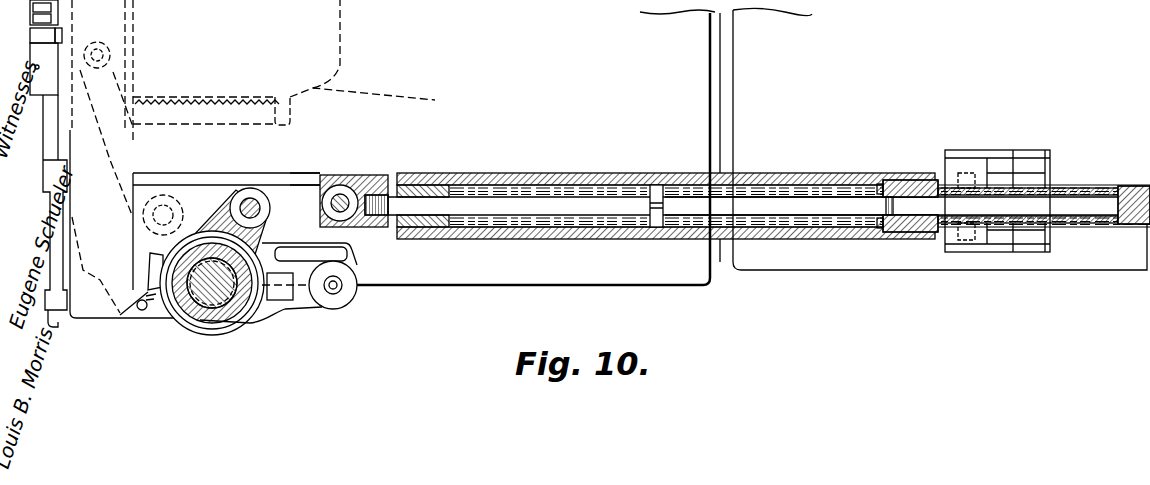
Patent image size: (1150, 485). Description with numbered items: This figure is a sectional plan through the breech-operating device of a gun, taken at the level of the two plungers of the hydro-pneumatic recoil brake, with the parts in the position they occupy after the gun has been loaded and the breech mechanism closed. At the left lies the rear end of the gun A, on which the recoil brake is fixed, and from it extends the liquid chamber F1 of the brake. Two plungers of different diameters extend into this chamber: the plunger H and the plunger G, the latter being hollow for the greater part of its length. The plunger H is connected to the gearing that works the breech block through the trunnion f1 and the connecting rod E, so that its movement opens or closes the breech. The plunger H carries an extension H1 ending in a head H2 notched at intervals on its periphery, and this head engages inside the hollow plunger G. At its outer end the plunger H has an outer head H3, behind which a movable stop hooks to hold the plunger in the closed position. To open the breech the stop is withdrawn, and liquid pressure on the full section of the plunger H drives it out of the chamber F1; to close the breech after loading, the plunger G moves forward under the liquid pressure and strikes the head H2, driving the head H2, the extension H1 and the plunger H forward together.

The connecting rod E is at (300, 207).
The trunnion f1 is at (343, 200).
The outer head of the plunger H3 is at (383, 178).
The plunger H is at (520, 200).
The liquid chamber F1 is at (593, 190).
The extension of the plunger H1 is at (835, 205).
The head of the plunger H2 is at (895, 180).
The plunger G is at (1087, 190).
The rear end of the gun A is at (620, 284).